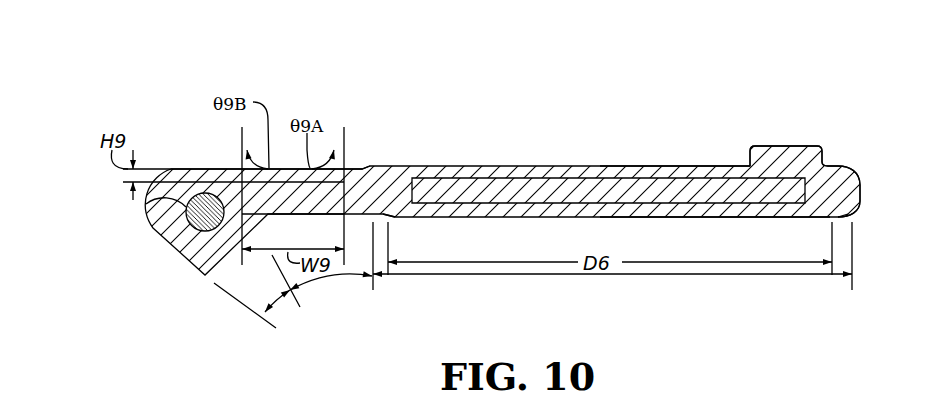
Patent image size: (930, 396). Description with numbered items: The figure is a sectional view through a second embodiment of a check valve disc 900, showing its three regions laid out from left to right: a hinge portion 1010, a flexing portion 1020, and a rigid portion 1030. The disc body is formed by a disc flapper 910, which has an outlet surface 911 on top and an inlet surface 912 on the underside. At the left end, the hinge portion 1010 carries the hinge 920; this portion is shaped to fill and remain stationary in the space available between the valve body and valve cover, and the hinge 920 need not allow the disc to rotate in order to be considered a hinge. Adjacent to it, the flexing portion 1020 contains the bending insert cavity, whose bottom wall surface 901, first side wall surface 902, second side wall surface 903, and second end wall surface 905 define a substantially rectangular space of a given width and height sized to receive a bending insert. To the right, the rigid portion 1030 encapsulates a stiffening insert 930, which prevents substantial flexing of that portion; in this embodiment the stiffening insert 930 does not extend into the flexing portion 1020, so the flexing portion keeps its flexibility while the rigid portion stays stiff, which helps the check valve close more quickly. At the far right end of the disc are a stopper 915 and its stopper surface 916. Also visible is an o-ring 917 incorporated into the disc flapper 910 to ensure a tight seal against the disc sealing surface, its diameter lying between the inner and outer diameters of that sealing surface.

The check valve disc 900 is at (578, 165).
The bottom wall surface 901 is at (255, 178).
The first side wall surface 902 is at (242, 169).
The second side wall surface 903 is at (400, 145).
The second end wall surface 905 is at (281, 168).
The disc flapper 910 is at (617, 165).
The outlet surface 911 is at (653, 165).
The inlet surface 912 is at (730, 218).
The stopper 915 is at (823, 163).
The stopper surface 916 is at (782, 146).
The o-ring 917 is at (395, 220).
The hinge 920 is at (147, 206).
The stiffening insert 930 is at (463, 190).
The hinge portion 1010 is at (289, 293).
The flexing portion 1020 is at (333, 278).
The rigid portion 1030 is at (580, 277).